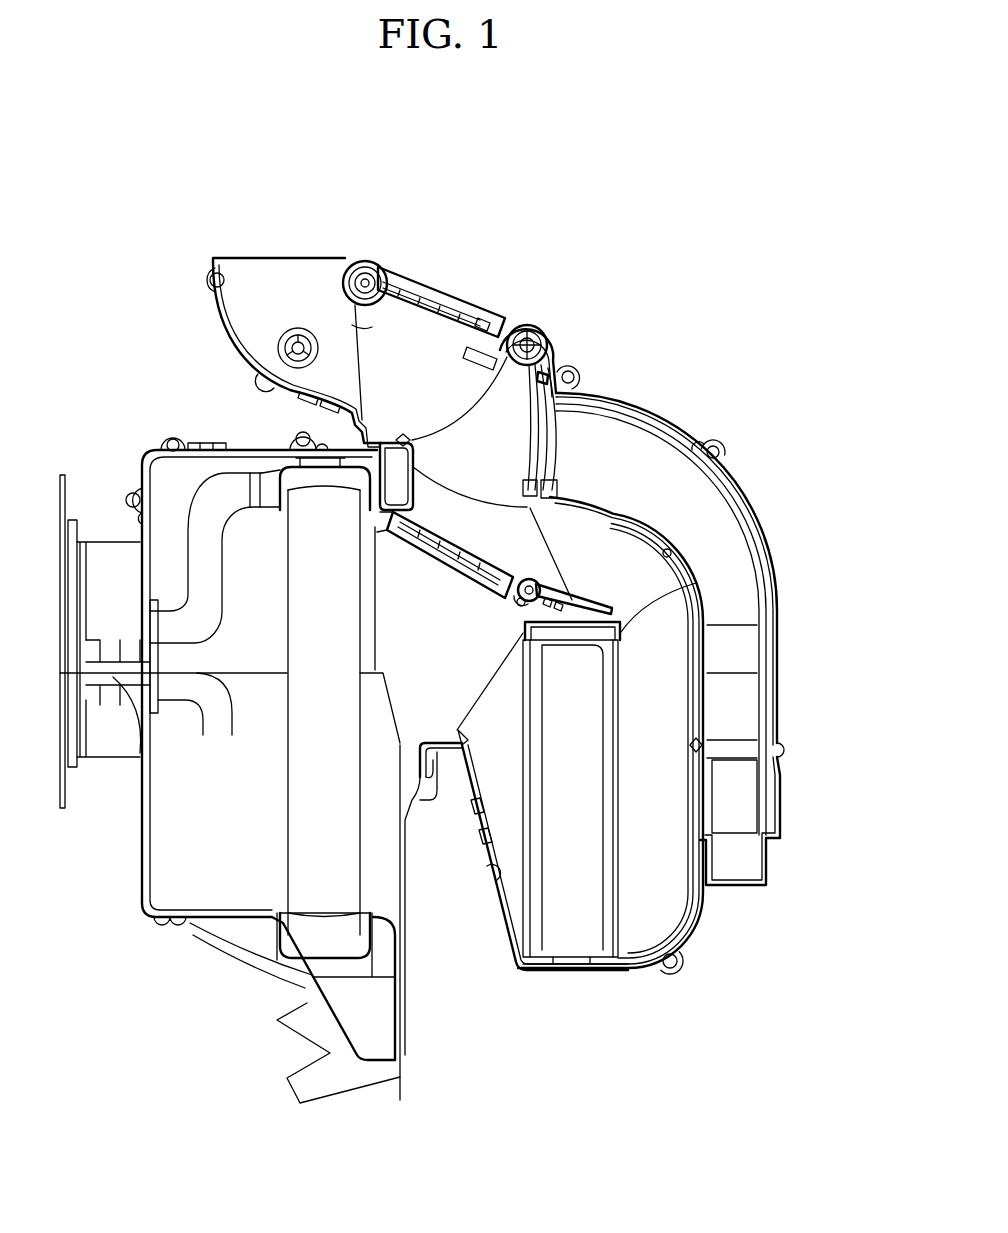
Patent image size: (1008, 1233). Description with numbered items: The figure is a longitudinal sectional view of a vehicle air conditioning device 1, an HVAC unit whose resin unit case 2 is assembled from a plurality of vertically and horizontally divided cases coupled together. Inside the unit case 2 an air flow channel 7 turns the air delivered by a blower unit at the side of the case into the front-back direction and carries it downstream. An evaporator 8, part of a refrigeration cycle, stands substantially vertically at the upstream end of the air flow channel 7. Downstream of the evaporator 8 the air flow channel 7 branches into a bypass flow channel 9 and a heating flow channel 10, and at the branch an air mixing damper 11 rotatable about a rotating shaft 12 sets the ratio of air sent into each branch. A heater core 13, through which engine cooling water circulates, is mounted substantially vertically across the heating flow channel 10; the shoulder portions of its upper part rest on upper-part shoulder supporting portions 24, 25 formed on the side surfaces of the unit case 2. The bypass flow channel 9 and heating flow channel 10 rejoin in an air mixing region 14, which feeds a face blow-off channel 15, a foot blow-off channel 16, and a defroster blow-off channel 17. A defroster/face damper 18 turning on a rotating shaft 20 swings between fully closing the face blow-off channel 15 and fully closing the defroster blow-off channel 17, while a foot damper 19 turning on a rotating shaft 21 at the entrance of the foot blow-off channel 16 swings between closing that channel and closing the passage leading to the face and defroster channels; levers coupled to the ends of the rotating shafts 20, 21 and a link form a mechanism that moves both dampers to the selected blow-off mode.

The vehicle air conditioning device 1 is at (492, 225).
The unit case 2 is at (141, 917).
The air flow channel 7 is at (250, 784).
The evaporator 8 is at (305, 662).
The bypass flow channel 9 is at (413, 632).
The heating flow channel 10 is at (637, 732).
The air mixing damper 11 is at (486, 570).
The rotating shaft 12 is at (532, 590).
The heater core 13 is at (565, 922).
The air mixing region 14 is at (497, 465).
The face blow-off channel 15 is at (413, 284).
The foot blow-off channel 16 is at (663, 467).
The defroster blow-off channel 17 is at (280, 277).
The defroster/face damper 18 is at (442, 318).
The foot damper 19 is at (540, 430).
The rotating shaft 20 is at (355, 265).
The rotating shaft 21 is at (533, 328).
The upper-part shoulder supporting portion 24 is at (622, 632).
The upper-part shoulder supporting portion 25 is at (622, 632).